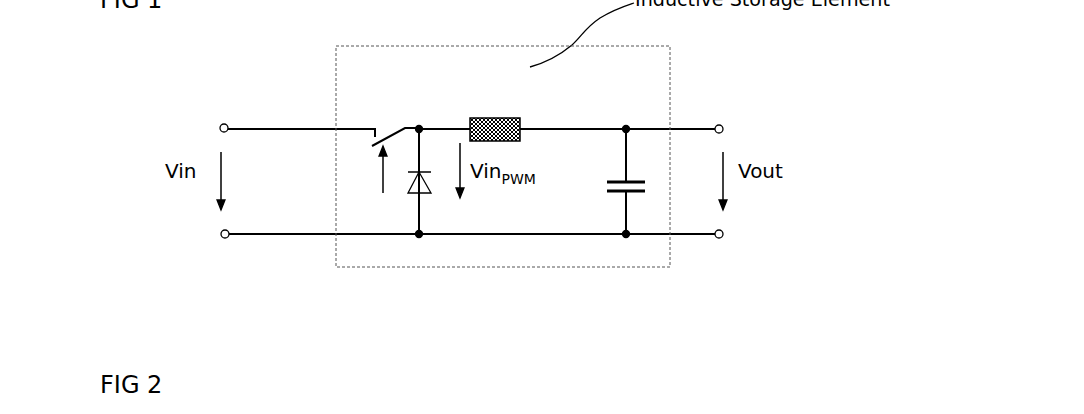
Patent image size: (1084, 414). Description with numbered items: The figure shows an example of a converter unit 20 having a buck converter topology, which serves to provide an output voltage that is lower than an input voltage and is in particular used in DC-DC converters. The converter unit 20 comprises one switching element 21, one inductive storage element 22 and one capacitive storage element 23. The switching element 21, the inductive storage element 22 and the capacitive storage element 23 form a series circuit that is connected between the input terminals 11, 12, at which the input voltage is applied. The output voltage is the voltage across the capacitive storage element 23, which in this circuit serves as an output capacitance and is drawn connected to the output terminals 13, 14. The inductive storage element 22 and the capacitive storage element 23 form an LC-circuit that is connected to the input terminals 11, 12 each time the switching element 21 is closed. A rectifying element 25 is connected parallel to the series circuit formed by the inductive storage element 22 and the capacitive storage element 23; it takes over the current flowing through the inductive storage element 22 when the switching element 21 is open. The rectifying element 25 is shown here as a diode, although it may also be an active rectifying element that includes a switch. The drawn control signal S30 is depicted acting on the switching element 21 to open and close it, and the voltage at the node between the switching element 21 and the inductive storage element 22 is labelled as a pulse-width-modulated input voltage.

The input terminal 11 is at (220, 124).
The input terminal 12 is at (220, 238).
The output terminal (positive) 13 is at (724, 124).
The output terminal (ground) 14 is at (724, 238).
The converter unit 20 is at (531, 45).
The switching element 21 is at (392, 125).
The inductive storage element 22 is at (497, 115).
The capacitive storage element 23 is at (620, 178).
The rectifying element 25 is at (431, 195).
The switch control signal S30 is at (381, 179).